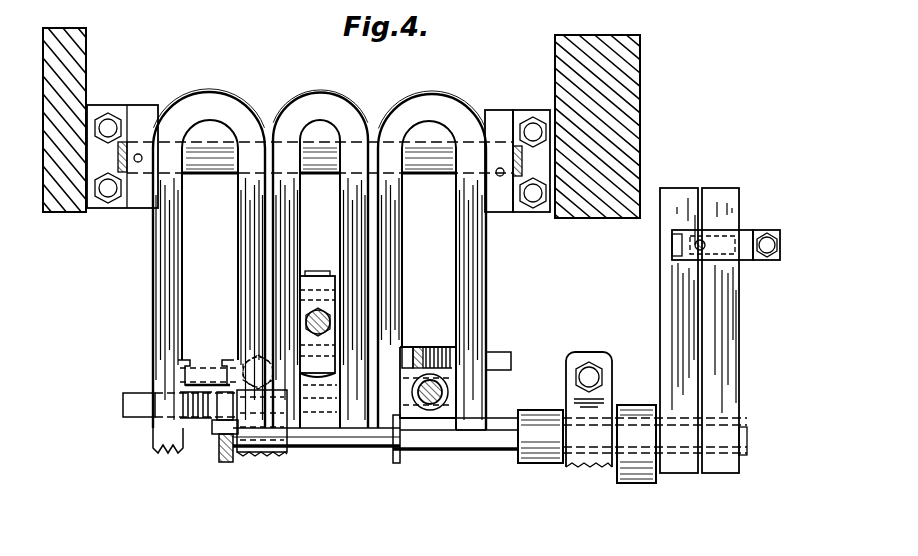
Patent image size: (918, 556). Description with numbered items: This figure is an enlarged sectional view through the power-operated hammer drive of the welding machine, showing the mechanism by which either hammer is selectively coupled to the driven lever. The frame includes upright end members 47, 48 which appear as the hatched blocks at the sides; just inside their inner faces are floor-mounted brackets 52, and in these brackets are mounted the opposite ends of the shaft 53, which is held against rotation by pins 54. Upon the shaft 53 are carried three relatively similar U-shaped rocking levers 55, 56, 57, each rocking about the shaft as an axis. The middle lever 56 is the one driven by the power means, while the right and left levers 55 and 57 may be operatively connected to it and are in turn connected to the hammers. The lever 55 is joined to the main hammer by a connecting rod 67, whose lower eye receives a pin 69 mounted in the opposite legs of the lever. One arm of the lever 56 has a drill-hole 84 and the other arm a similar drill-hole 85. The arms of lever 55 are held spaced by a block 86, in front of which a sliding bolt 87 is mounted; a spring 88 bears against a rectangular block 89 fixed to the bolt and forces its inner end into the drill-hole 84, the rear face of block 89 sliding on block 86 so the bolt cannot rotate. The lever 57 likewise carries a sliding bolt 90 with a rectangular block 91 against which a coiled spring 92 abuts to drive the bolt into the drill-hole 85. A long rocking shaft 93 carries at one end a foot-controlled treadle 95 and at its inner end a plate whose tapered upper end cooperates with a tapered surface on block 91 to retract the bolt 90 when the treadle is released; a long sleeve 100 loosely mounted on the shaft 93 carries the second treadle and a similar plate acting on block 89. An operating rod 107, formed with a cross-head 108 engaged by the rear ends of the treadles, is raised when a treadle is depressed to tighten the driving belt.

The upright end member 47 is at (75, 52).
The upright end member 48 is at (625, 85).
The bracket 52 is at (132, 112).
The shaft 53 is at (316, 152).
The pin 54 is at (502, 178).
The U-shaped rocking lever 55 is at (442, 105).
The U-shaped rocking lever 56 is at (308, 105).
The U-shaped rocking lever 57 is at (220, 102).
The connecting rod 67 is at (430, 410).
The pin 69 is at (488, 396).
The drill-hole 84 is at (345, 366).
The drill-hole 85 is at (290, 408).
The block 86 is at (418, 345).
The sliding bolt 87 is at (502, 360).
The spring 88 is at (455, 352).
The rectangular block 89 is at (682, 200).
The sliding bolt 90 is at (132, 412).
The rectangular block 91 is at (214, 432).
The coiled spring 92 is at (196, 426).
The rocking shaft 93 is at (318, 448).
The foot-controlled treadle 95 is at (720, 200).
The sleeve 100 is at (470, 455).
The operating rod 107 is at (695, 247).
The cross-head 108 is at (672, 240).